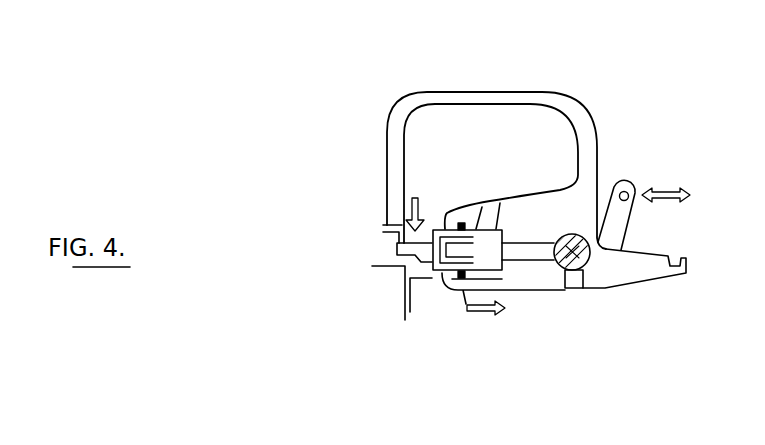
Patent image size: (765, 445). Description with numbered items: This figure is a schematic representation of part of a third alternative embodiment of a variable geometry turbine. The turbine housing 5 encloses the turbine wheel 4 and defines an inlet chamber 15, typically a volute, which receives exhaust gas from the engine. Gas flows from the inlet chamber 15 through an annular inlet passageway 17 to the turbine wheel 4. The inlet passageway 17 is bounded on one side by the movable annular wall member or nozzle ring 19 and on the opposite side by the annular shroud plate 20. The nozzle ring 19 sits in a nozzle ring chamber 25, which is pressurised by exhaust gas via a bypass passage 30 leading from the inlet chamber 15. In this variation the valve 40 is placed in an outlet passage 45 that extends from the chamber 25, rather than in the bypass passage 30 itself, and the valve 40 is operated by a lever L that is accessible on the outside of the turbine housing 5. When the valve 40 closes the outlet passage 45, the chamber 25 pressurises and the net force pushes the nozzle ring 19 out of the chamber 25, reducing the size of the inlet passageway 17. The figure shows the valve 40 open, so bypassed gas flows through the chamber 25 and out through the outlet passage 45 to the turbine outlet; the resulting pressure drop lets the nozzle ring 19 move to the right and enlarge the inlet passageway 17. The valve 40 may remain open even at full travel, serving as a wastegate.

The turbine wheel 4 is at (465, 322).
The turbine housing 5 is at (467, 97).
The inlet chamber 15 is at (427, 138).
The inlet passageway 17 is at (405, 229).
The nozzle ring 19 is at (444, 230).
The shroud plate 20 is at (377, 270).
The nozzle ring chamber 25 is at (493, 263).
The bypass passage 30 is at (492, 201).
The valve 40 is at (585, 257).
The outlet passage 45 is at (576, 283).
The lever L is at (616, 213).